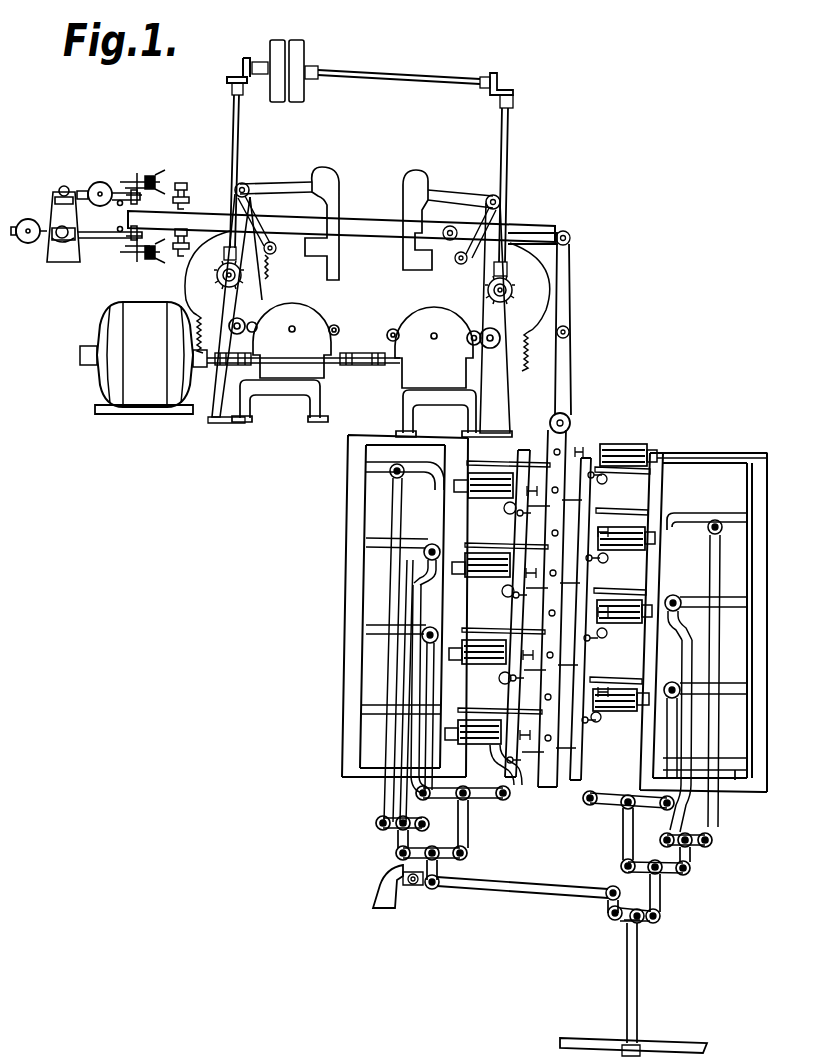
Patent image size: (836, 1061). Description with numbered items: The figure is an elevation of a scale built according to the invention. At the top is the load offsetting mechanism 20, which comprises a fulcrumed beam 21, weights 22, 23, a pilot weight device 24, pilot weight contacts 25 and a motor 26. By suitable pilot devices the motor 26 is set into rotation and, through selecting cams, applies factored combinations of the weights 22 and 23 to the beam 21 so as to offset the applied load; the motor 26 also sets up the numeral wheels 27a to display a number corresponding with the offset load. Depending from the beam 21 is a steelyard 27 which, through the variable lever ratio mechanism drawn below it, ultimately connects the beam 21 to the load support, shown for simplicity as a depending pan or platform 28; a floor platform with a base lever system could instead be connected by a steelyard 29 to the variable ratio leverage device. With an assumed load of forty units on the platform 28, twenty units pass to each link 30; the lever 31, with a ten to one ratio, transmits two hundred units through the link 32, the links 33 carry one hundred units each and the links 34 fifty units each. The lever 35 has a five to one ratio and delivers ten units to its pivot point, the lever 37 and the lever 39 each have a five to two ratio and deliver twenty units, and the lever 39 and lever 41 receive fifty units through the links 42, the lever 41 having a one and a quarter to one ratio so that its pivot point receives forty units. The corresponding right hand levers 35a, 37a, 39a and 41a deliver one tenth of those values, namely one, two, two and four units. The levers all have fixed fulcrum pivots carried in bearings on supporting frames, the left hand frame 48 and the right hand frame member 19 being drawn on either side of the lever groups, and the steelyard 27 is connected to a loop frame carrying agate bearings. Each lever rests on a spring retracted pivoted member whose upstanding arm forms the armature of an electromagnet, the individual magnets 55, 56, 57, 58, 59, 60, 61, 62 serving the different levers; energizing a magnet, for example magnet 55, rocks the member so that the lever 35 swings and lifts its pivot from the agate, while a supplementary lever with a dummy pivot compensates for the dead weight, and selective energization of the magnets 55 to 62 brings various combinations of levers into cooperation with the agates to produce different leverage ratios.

The right frame 19 is at (752, 566).
The load offsetting mechanism 20 is at (553, 224).
The fulcrumed beam 21 is at (350, 235).
The weight 22 is at (313, 178).
The weight 23 is at (414, 182).
The pilot weight device 24 is at (97, 188).
The pilot weight contacts 25 is at (122, 186).
The motor 26 is at (143, 358).
The steelyard 27 is at (570, 360).
The numeral wheels 27a is at (278, 102).
The platform 28 is at (672, 1044).
The steelyard 29 is at (640, 992).
The link 30 is at (662, 899).
The lever 31 is at (526, 892).
The link 32 is at (440, 862).
The link 33 is at (396, 840).
The link 34 is at (405, 752).
The lever 35 is at (424, 476).
The lever 35a is at (703, 519).
The lever 37 is at (383, 546).
The lever 37a is at (700, 616).
The lever 39 is at (383, 628).
The lever 39a is at (703, 692).
The lever 41 is at (380, 712).
The lever 41a is at (723, 796).
The link 42 is at (506, 790).
The frame 48 is at (347, 522).
The electromagnet 55 is at (637, 455).
The magnet 56 is at (622, 546).
The magnet 57 is at (628, 625).
The magnet 58 is at (625, 706).
The magnet 59 is at (490, 493).
The magnet 60 is at (489, 576).
The magnet 61 is at (474, 665).
The magnet 62 is at (467, 746).